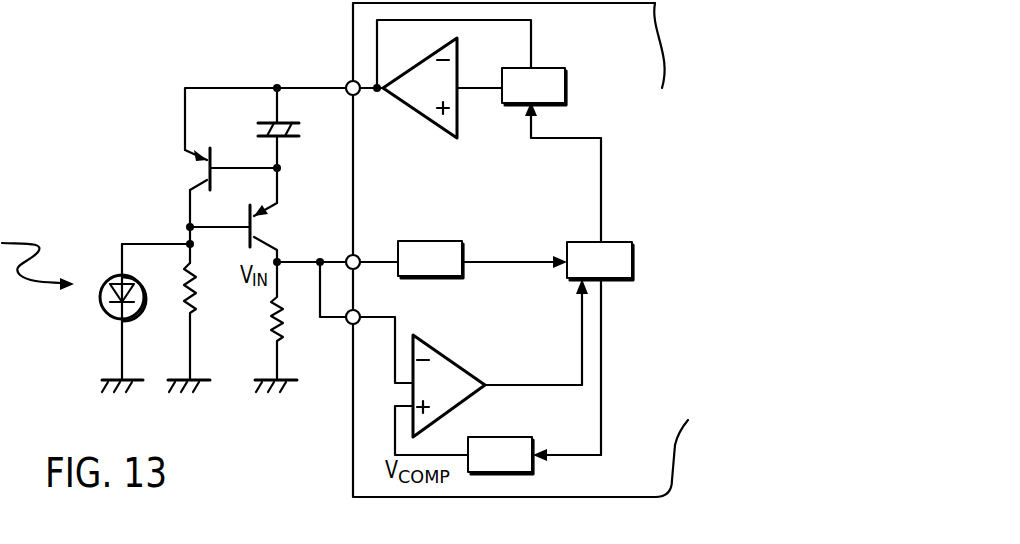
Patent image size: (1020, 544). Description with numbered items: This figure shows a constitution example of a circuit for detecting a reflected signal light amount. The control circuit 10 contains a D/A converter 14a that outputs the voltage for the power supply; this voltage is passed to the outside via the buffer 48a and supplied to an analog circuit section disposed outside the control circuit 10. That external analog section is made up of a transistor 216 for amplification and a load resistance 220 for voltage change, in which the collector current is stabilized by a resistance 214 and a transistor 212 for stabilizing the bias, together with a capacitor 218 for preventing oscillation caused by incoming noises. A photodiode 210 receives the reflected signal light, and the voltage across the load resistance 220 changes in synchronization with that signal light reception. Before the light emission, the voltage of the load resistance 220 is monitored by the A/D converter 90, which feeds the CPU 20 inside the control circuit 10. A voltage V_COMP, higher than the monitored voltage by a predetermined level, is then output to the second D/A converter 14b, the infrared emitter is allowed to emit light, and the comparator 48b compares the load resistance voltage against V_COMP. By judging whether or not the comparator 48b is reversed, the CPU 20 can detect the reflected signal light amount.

The control circuit 10 is at (663, 40).
The D/A converter 14a is at (552, 68).
The D/A converter 14b is at (533, 465).
The CPU 20 is at (610, 240).
The buffer 48a is at (418, 115).
The comparator 48b is at (447, 352).
The A/D converter 90 is at (430, 240).
The photodiode 210 is at (105, 305).
The transistor 212 is at (190, 164).
The resistance 214 is at (205, 288).
The transistor 216 is at (273, 228).
The capacitor 218 is at (253, 128).
The resistance 220 is at (287, 317).